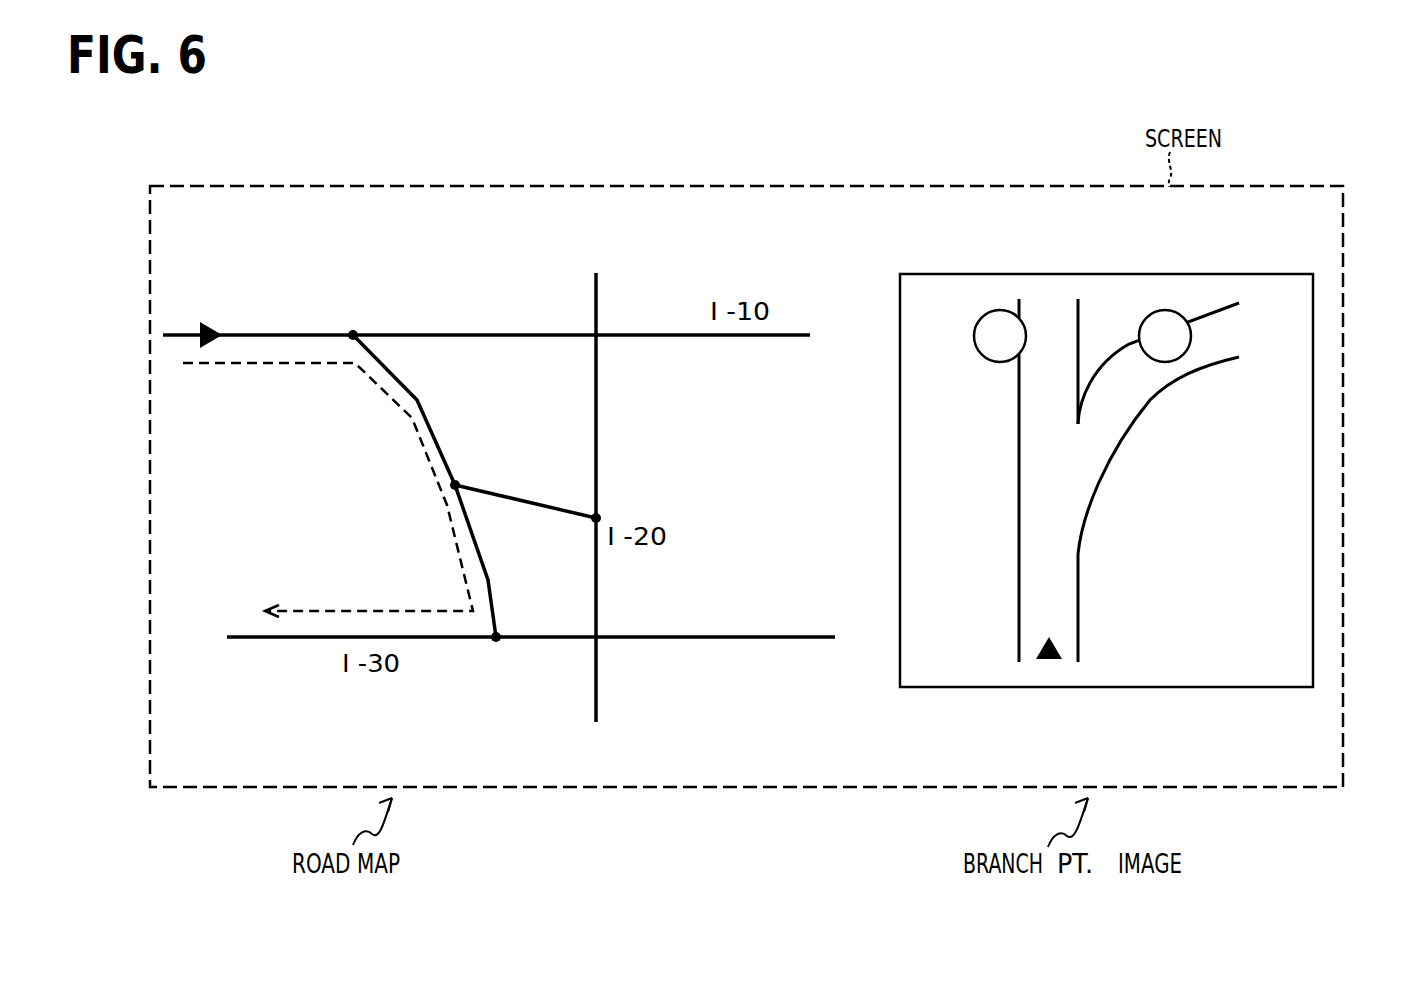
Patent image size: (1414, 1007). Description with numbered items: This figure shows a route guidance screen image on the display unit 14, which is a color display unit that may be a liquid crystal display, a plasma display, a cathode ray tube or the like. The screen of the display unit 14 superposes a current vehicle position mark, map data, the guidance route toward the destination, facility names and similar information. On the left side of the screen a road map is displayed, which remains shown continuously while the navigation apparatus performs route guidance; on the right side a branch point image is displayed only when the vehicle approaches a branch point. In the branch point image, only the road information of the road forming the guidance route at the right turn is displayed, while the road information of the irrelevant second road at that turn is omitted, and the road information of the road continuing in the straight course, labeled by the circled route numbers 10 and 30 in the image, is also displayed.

The display unit 14 is at (1318, 162).
The route number sign 10 is at (1000, 336).
The route number sign 30 is at (1165, 336).